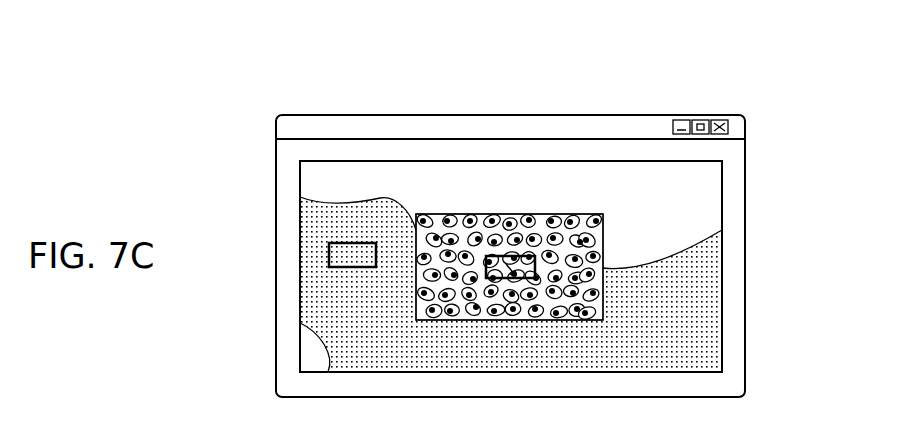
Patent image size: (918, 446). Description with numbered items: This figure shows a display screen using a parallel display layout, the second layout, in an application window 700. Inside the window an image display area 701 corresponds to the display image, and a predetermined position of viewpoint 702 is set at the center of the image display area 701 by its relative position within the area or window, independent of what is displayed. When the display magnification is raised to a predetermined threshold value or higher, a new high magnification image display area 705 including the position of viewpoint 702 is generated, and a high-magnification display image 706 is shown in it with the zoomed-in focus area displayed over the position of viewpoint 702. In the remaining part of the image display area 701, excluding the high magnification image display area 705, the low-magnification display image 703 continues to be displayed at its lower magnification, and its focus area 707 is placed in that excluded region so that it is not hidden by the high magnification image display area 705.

The application window 700 is at (308, 115).
The image display area 701 is at (300, 268).
The position of viewpoint 702 is at (535, 257).
The low-magnification display image 703 is at (617, 333).
The high magnification image display area 705 is at (509, 198).
The high-magnification display image 706 is at (465, 224).
The focus area 707 is at (359, 243).